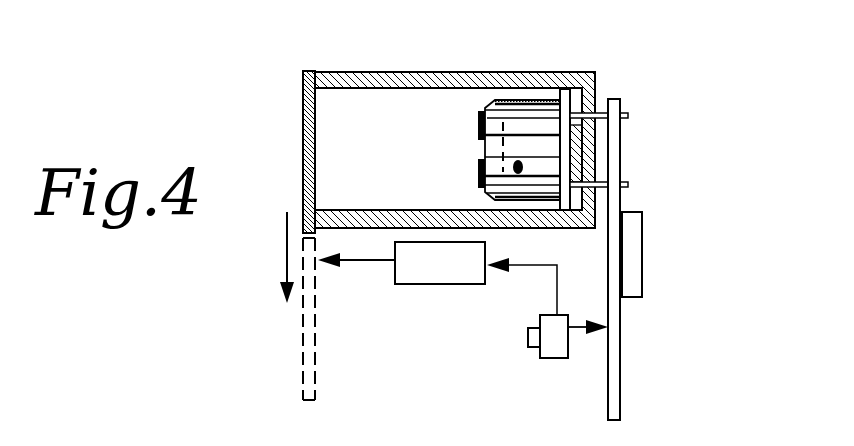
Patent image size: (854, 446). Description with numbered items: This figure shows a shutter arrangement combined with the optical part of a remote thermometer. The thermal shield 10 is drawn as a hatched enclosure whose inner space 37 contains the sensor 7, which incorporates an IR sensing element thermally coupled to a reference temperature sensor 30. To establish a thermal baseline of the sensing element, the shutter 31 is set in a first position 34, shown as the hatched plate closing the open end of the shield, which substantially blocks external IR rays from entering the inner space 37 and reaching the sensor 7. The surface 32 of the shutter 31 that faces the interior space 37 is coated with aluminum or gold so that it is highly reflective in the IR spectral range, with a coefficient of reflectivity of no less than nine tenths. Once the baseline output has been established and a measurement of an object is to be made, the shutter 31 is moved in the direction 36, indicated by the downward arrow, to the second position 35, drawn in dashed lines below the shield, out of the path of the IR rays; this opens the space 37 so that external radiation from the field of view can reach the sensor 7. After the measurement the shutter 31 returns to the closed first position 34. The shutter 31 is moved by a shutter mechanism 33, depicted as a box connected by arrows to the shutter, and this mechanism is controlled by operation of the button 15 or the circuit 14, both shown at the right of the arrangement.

The sensor 7 is at (537, 112).
The thermal shield 10 is at (477, 75).
The circuit 14 is at (628, 253).
The button 15 is at (555, 340).
The reference temperature sensor 30 is at (523, 165).
The shutter 31 is at (307, 103).
The surface 32 is at (316, 123).
The shutter mechanism 33 is at (453, 274).
The first position 34 is at (302, 88).
The second position 35 is at (301, 366).
The direction 36 is at (285, 242).
The inner space 37 is at (407, 120).